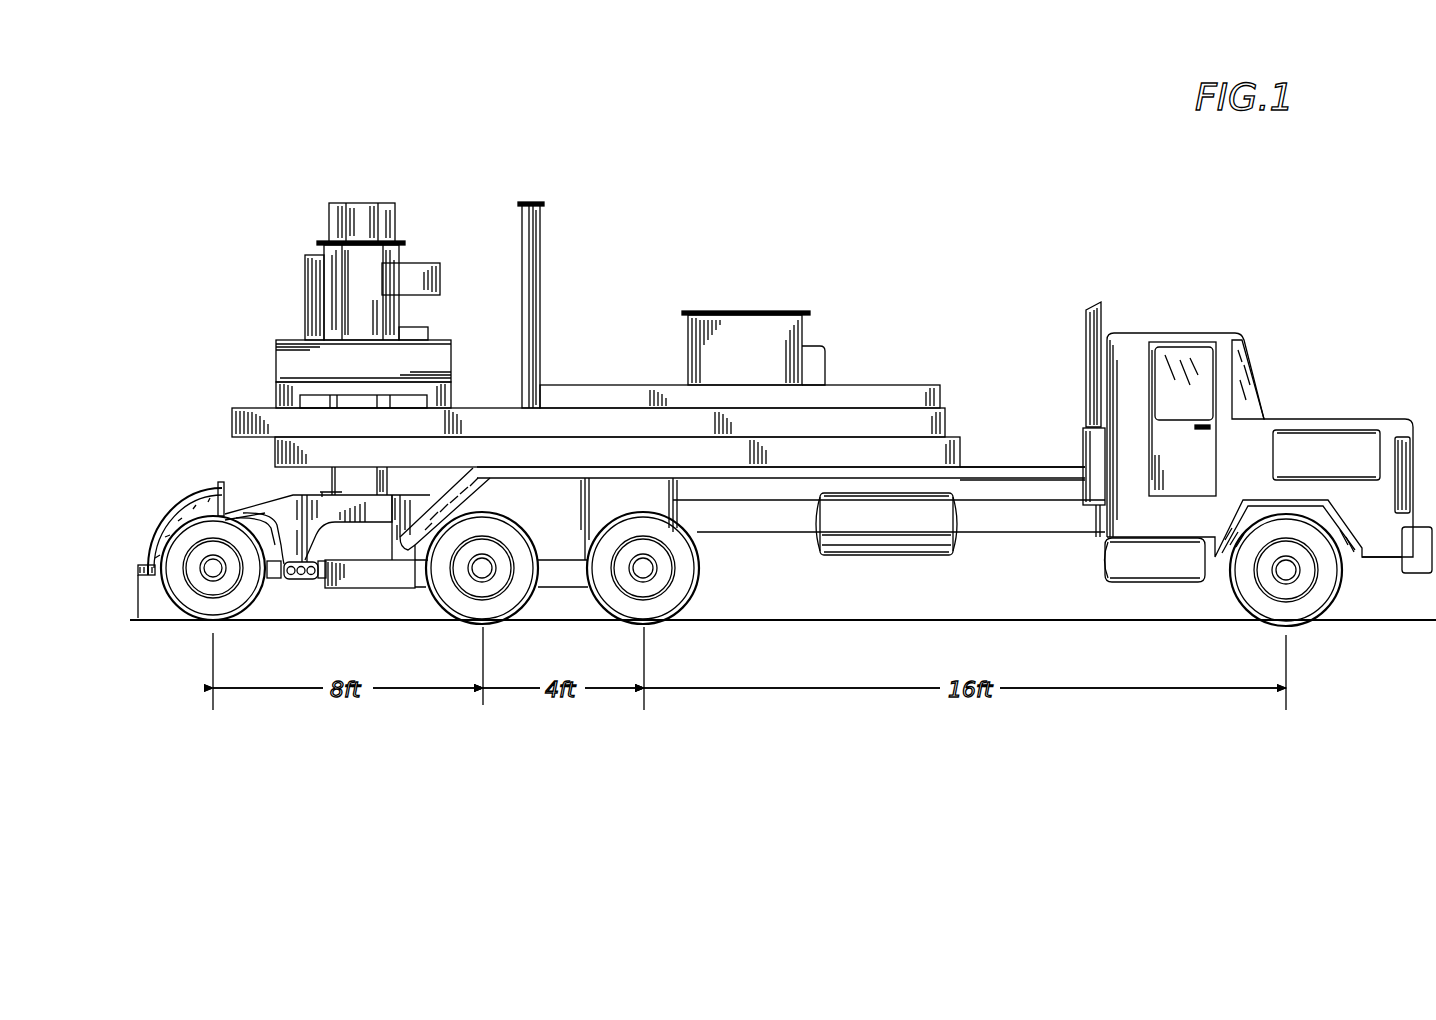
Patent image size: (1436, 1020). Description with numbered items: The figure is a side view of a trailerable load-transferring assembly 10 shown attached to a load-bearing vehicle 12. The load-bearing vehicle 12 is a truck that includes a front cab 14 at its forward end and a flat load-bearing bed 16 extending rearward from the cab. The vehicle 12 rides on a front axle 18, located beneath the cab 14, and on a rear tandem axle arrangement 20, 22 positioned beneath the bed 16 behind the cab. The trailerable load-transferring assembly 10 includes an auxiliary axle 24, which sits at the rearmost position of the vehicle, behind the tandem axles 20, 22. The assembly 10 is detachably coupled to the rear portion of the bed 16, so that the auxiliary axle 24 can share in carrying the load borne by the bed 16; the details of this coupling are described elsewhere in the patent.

The trailerable load-transferring assembly 10 is at (204, 455).
The load-bearing vehicle 12 is at (1011, 247).
The front cab 14 is at (1180, 334).
The flat load-bearing bed 16 is at (1008, 467).
The front axle 18 is at (1288, 572).
The rear tandem axle 20 is at (648, 572).
The rear tandem axle 22 is at (480, 572).
The auxiliary axle 24 is at (215, 571).